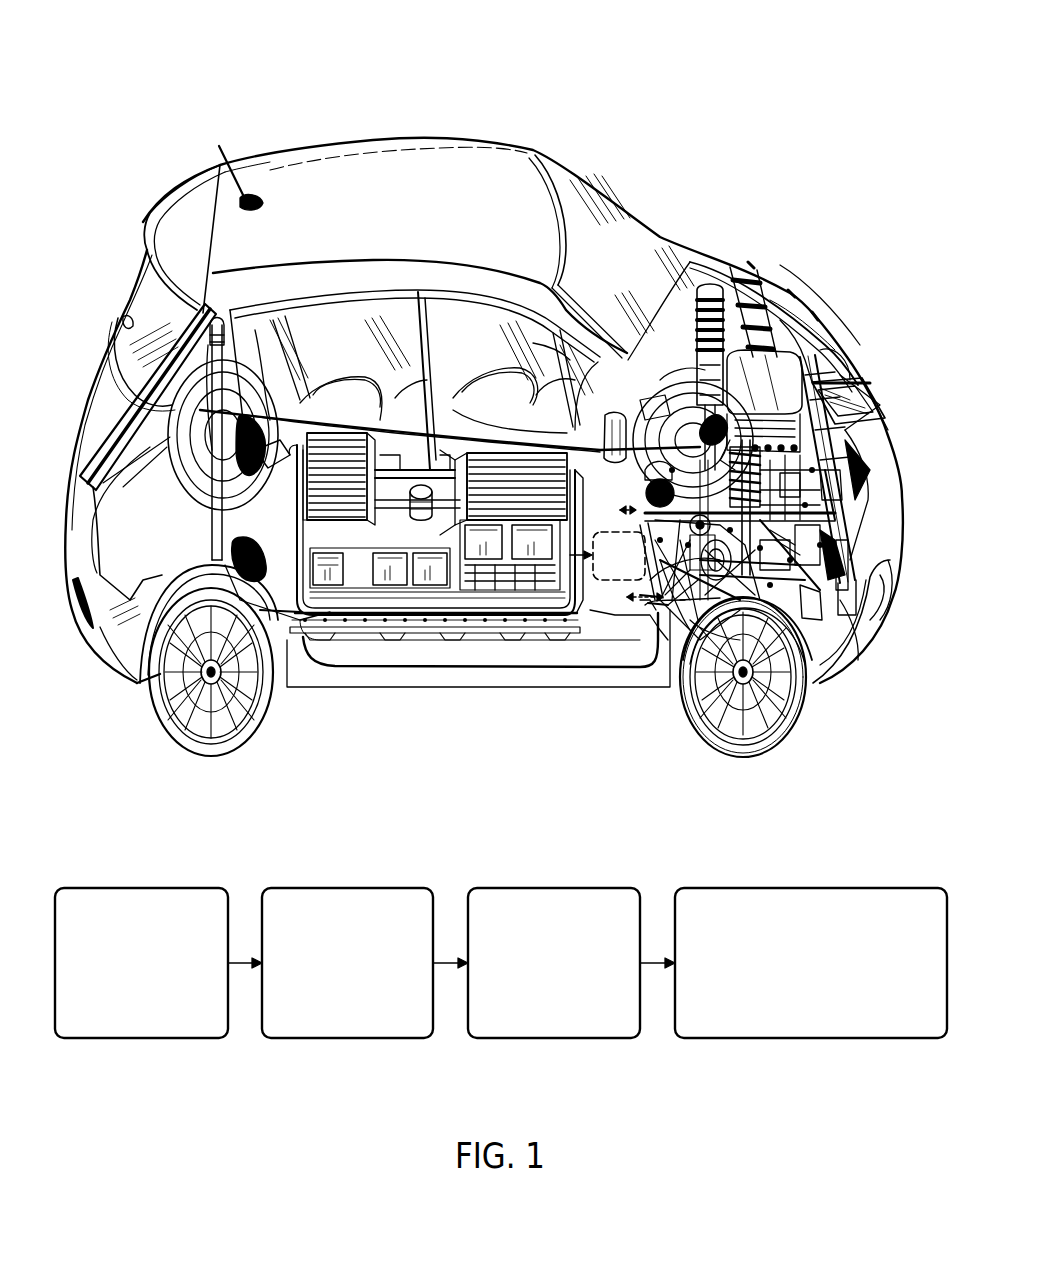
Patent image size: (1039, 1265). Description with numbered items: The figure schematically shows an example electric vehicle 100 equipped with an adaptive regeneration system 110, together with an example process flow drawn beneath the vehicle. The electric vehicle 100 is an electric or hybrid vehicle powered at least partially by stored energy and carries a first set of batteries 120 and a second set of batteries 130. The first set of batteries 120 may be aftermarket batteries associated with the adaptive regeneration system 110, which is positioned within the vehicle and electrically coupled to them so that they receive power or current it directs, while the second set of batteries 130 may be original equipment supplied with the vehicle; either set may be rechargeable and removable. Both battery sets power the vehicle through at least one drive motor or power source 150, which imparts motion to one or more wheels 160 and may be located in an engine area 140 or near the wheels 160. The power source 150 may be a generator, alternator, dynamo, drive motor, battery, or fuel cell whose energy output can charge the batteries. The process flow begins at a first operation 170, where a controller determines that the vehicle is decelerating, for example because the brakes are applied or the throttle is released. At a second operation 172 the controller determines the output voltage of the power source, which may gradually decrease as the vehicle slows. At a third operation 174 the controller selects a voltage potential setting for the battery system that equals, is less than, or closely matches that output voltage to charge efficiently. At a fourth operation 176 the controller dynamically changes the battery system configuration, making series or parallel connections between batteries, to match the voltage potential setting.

The electric vehicle 100 is at (107, 45).
The adaptive regeneration system 110 is at (611, 503).
The first set of batteries 120 is at (335, 613).
The second set of batteries 130 is at (523, 603).
The engine area 140 is at (846, 313).
The power source 150 is at (847, 538).
The wheels 160 is at (813, 705).
The first operation 170 is at (142, 888).
The second operation 172 is at (348, 888).
The third operation 174 is at (555, 888).
The fourth operation 176 is at (810, 888).